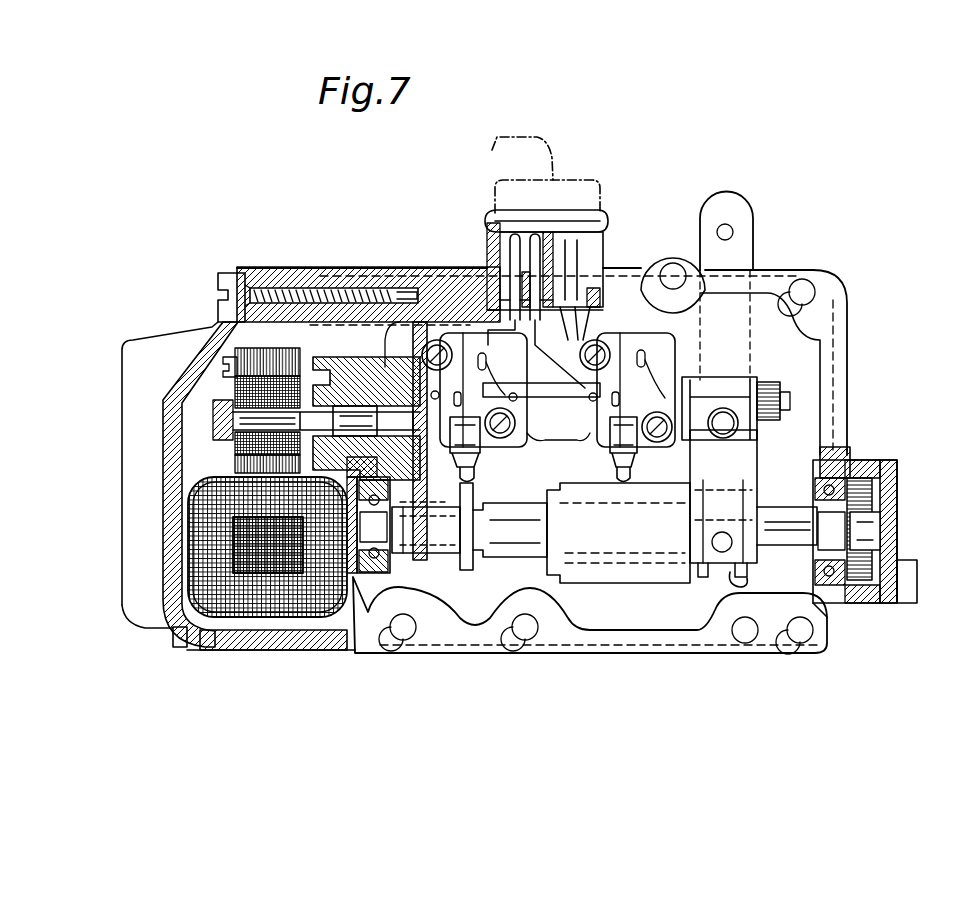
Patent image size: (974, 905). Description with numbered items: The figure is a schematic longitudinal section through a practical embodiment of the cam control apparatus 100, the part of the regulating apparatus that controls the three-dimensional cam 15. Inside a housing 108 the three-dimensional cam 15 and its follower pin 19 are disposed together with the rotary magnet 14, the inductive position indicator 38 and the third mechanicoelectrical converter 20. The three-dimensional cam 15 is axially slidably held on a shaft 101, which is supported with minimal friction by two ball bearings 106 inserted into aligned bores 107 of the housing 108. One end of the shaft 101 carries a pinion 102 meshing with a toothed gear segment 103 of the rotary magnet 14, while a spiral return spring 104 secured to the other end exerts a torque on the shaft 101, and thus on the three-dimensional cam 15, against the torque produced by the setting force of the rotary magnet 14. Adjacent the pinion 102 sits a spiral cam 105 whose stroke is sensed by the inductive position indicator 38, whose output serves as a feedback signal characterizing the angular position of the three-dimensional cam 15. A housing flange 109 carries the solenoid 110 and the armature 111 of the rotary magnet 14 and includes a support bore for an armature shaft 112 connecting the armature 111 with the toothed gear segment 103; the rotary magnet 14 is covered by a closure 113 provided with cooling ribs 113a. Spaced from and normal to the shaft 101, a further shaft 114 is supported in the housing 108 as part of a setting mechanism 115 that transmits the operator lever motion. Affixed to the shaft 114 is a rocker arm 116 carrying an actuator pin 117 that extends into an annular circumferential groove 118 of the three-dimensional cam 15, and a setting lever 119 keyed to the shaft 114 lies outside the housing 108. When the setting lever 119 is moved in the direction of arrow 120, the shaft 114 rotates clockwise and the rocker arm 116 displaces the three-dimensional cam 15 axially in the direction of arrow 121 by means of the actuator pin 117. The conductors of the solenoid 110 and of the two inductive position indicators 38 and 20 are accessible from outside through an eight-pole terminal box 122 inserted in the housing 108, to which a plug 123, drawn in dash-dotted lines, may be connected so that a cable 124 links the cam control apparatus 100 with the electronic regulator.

The cam control apparatus 100 is at (775, 657).
The housing 108 is at (832, 306).
The setting lever 119 is at (736, 234).
The arrow 120 is at (753, 176).
The cable 124 is at (530, 136).
The plug 123 is at (597, 190).
The terminal box 122 is at (488, 238).
The armature 111 is at (265, 397).
The armature shaft 112 is at (215, 421).
The rotary magnet 14 is at (214, 460).
The closure 113 is at (176, 510).
The cooling ribs 113a is at (136, 545).
The toothed gear segment 103 is at (387, 441).
The solenoid 110 is at (238, 600).
The housing flange 109 is at (321, 648).
The ball bearings 106 is at (388, 553).
The aligned bores 107 is at (393, 582).
The pinion 102 is at (447, 530).
The spiral cam 105 is at (468, 565).
The shaft 101 is at (508, 517).
The three-dimensional cam 15 is at (608, 575).
The rocker arm 116 is at (753, 479).
The actuator pin 117 is at (734, 544).
The annular circumferential groove 118 is at (748, 585).
The further shaft 114 is at (727, 428).
The setting mechanism 115 is at (772, 437).
The arrow 121 is at (720, 592).
The spiral return spring 104 is at (865, 508).
The inductive position indicator 38 is at (470, 333).
The third mechanicoelectrical converter 20 is at (623, 333).
The follower pin 19 is at (613, 481).